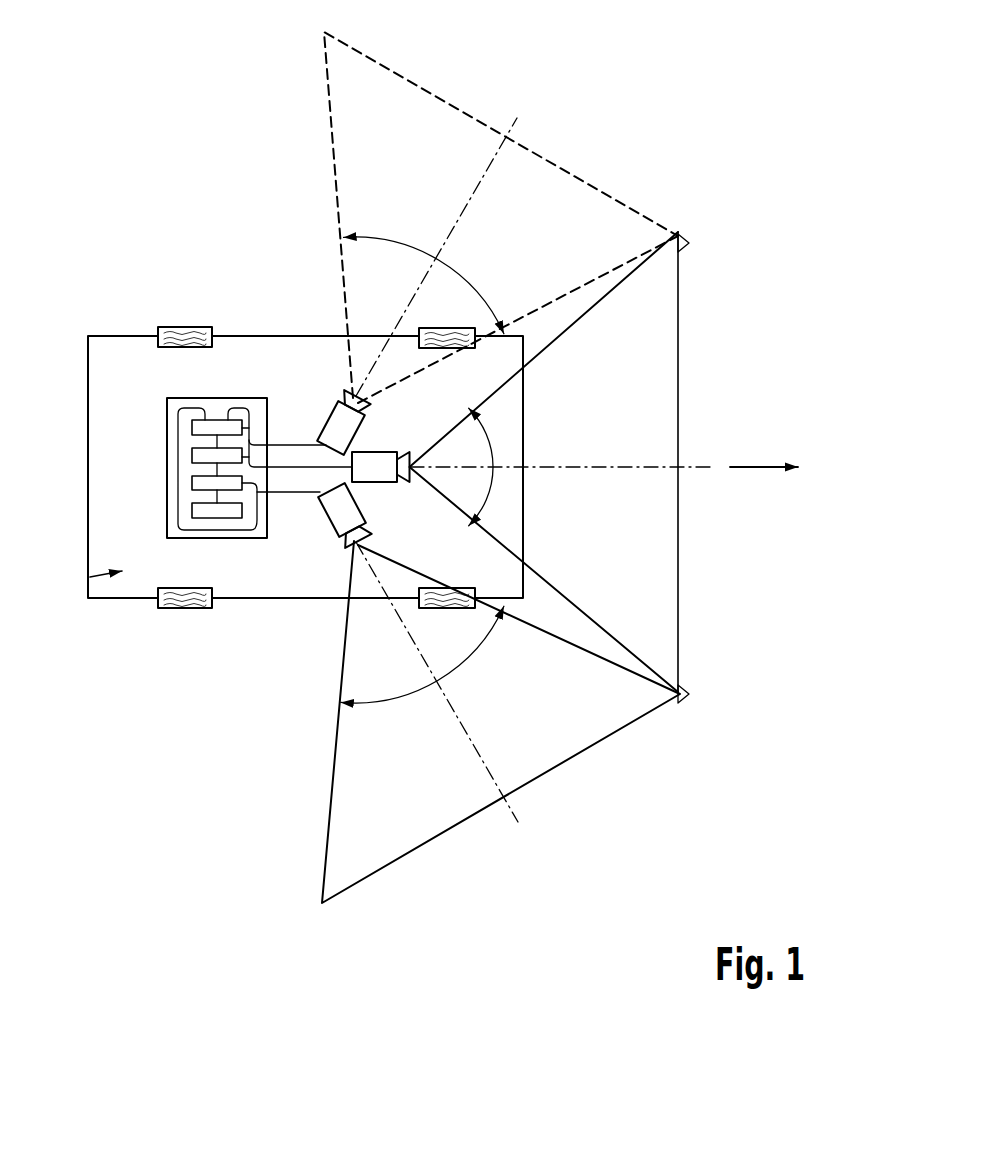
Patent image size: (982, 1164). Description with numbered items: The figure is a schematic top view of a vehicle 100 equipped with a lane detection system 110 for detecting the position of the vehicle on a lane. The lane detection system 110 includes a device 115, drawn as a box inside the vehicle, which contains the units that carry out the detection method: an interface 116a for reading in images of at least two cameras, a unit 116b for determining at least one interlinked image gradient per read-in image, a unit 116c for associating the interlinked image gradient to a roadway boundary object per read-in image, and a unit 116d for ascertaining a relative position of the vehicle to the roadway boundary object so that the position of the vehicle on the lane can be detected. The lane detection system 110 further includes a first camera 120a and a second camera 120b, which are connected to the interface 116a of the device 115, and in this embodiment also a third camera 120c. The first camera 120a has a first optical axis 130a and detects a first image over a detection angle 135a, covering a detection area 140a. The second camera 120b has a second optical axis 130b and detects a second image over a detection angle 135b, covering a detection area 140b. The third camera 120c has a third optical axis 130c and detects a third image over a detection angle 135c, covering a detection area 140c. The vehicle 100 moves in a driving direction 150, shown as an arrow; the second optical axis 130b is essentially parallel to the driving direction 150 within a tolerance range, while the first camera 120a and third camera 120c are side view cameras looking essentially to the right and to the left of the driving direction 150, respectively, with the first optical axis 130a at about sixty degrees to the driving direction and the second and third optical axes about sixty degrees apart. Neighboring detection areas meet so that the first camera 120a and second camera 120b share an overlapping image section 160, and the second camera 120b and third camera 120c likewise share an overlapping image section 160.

The vehicle 100 is at (257, 336).
The lane detection system 110 is at (88, 578).
The device 115 is at (222, 398).
The interface 116a is at (192, 428).
The unit for determining 116b is at (192, 457).
The unit for associating 116c is at (192, 483).
The unit for ascertaining 116d is at (192, 510).
The first camera 120a is at (328, 532).
The second camera 120b is at (385, 483).
The third camera 120c is at (328, 437).
The first optical axis 130a is at (518, 822).
The second optical axis 130b is at (700, 467).
The sensor axis of third sensor 130c is at (518, 118).
The detection angle 135a is at (420, 692).
The detection angle 135b is at (488, 428).
The detection angle 135c is at (460, 268).
The detection area 140a is at (633, 710).
The detection area 140b is at (660, 548).
The detection area 140c is at (400, 117).
The driving direction 150 is at (760, 470).
The overlapping image section 160 is at (678, 232).